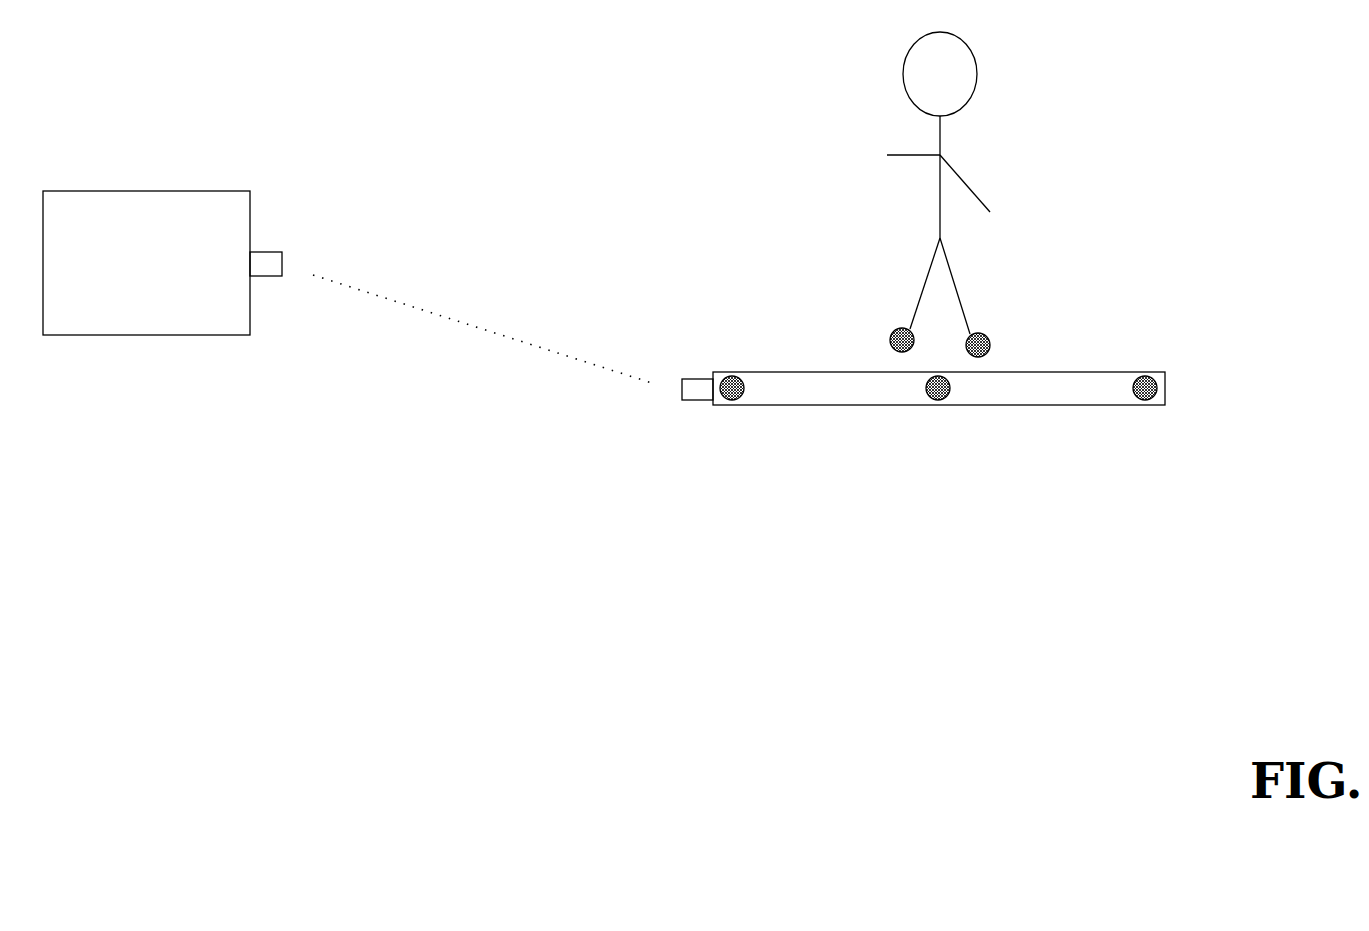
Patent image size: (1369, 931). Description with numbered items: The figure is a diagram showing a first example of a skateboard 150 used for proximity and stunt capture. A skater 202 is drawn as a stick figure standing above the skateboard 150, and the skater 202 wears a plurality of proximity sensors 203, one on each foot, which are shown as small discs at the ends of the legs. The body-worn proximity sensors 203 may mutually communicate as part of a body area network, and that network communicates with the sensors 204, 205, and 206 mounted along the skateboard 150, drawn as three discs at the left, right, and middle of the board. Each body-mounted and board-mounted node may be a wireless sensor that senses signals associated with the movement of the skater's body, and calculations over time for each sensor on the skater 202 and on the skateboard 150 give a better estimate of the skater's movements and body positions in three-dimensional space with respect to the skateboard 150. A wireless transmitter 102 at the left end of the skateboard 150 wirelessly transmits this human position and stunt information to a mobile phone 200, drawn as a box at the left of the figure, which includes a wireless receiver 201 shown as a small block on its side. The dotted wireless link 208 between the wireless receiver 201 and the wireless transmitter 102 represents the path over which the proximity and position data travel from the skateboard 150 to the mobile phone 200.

The mobile phone 200 is at (150, 189).
The wireless receiver 201 is at (283, 252).
The wireless communication link 208 is at (525, 353).
The skater 202 is at (877, 106).
The proximity sensor 203 is at (968, 353).
The skateboard 150 is at (1165, 396).
The wireless transmitter 102 is at (679, 390).
The sensor 204 is at (725, 370).
The sensor 206 is at (923, 416).
The sensor 205 is at (1142, 375).